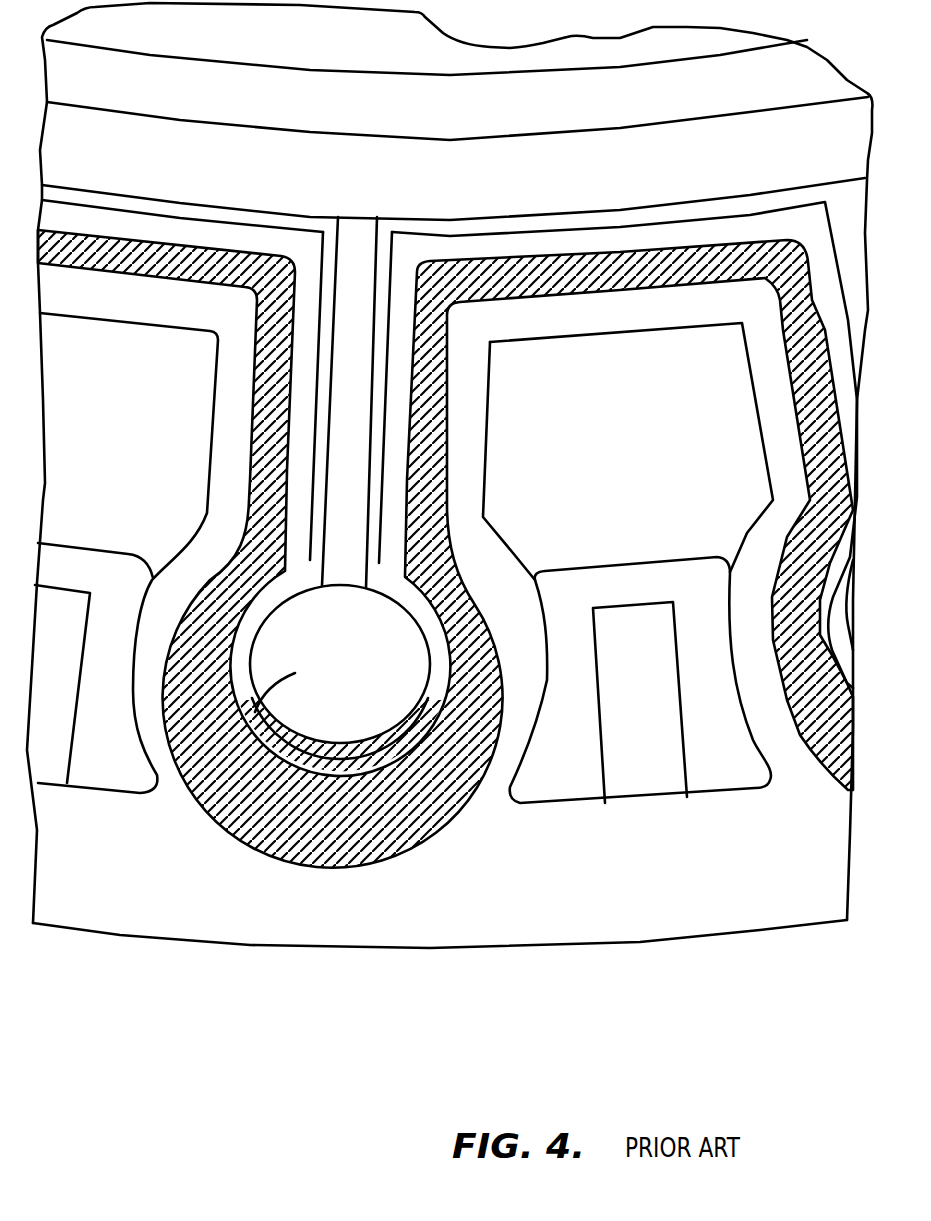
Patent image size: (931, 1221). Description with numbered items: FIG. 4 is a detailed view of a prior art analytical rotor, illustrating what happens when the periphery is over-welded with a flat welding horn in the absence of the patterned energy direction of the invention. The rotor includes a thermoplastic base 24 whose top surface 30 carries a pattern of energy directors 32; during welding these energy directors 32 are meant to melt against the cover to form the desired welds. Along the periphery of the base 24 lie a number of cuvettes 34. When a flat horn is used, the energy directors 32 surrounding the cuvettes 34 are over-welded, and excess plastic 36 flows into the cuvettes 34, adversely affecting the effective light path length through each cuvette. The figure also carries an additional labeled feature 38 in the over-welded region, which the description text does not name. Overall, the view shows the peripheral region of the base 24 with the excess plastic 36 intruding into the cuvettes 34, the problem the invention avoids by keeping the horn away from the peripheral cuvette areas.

The base 24 is at (680, 942).
The top surface 30 is at (597, 905).
The energy directors 32 is at (413, 848).
The cuvettes 34 is at (195, 810).
The excess plastic 36 is at (292, 842).
The eccentric sleeve 38 is at (318, 735).